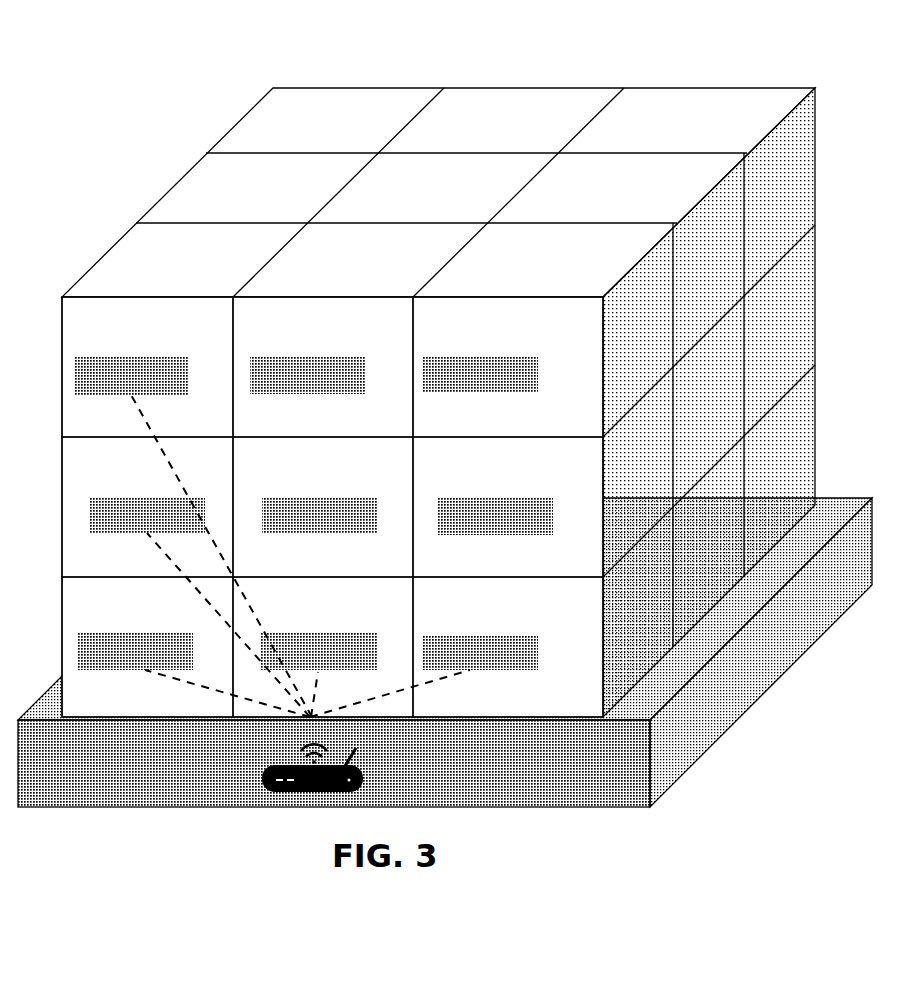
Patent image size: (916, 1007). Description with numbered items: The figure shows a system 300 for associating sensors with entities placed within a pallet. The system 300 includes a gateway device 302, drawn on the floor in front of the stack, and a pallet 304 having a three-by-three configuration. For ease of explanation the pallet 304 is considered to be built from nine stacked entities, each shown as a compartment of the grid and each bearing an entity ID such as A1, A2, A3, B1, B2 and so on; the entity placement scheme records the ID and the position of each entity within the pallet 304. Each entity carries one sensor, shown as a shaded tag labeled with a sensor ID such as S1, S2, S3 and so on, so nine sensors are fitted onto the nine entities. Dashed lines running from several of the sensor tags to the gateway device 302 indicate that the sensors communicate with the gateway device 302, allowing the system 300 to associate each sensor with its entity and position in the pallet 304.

The system 300 is at (453, 417).
The gateway device 302 is at (428, 753).
The pallet 304 is at (889, 348).